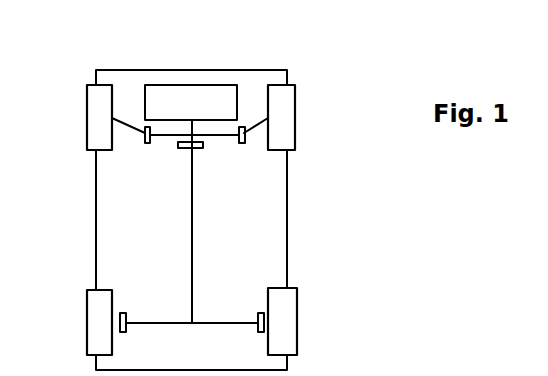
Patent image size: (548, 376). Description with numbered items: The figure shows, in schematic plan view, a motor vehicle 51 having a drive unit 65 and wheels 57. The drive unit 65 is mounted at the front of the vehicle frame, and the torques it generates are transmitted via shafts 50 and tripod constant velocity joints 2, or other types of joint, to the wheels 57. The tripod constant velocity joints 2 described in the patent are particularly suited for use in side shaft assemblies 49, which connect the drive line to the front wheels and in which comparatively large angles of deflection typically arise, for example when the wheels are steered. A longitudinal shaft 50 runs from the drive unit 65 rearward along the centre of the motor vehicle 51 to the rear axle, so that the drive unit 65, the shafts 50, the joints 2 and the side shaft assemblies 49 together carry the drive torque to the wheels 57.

The tripod constant velocity joint 2 is at (244, 138).
The side shaft assembly 49 is at (127, 135).
The shaft 50 is at (256, 125).
The motor vehicle 51 is at (232, 257).
The wheel 57 is at (103, 317).
The drive unit 65 is at (180, 97).